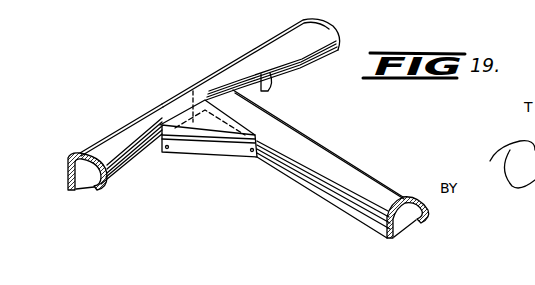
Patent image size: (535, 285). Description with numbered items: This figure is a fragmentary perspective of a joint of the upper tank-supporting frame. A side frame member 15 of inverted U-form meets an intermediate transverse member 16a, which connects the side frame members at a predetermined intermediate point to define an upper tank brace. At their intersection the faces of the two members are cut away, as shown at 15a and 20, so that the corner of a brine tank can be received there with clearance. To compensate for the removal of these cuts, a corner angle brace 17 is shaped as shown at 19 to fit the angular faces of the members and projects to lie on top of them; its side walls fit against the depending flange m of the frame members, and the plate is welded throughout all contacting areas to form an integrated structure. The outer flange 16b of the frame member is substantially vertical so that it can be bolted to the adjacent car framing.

The side frame member 15 is at (279, 44).
The cut 15a is at (193, 91).
The intermediate transverse member 16a is at (360, 178).
The outer flange 16b is at (68, 168).
The corner angle brace 17 is at (212, 125).
The shaped portion of angle brace 19 is at (166, 147).
The cut 20 is at (265, 91).
The depending flange m is at (93, 182).